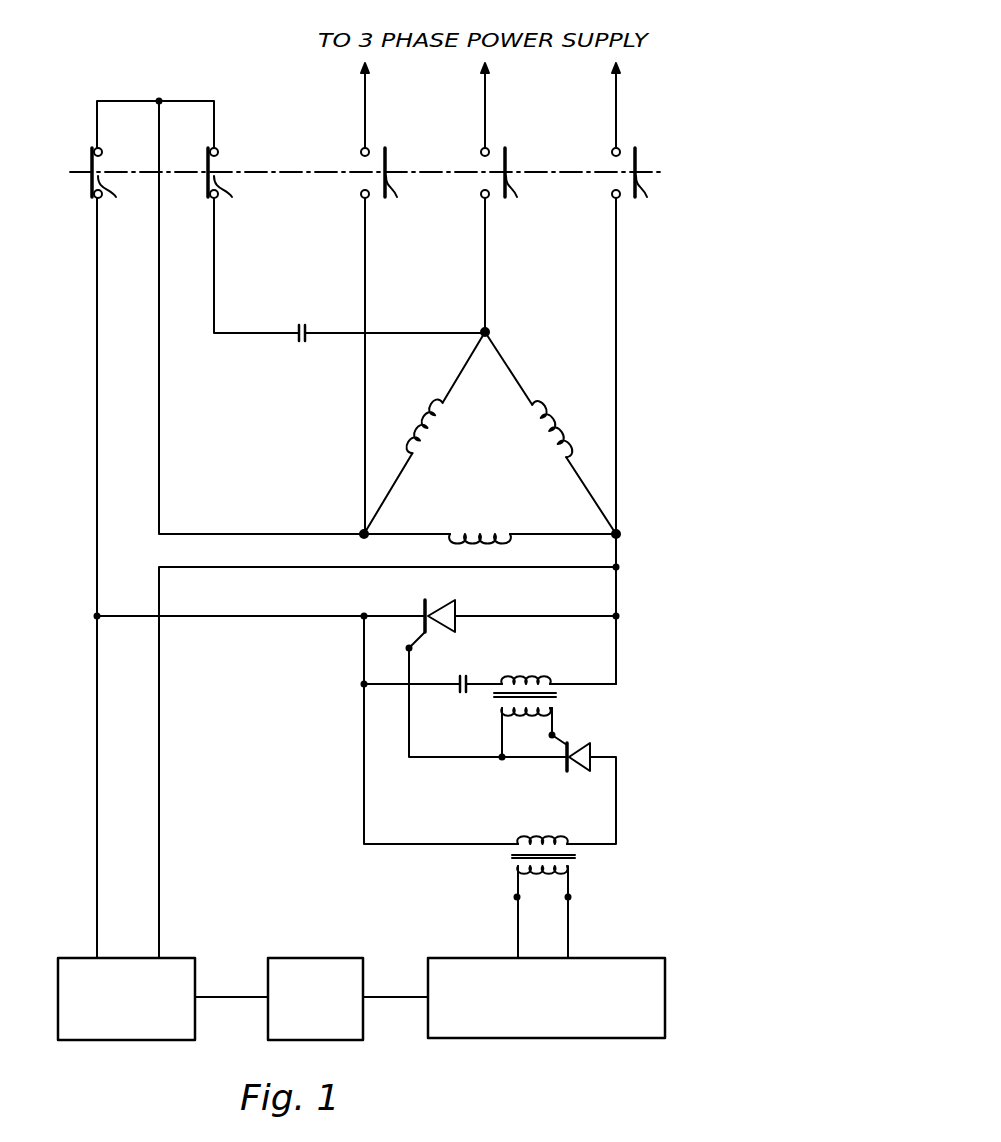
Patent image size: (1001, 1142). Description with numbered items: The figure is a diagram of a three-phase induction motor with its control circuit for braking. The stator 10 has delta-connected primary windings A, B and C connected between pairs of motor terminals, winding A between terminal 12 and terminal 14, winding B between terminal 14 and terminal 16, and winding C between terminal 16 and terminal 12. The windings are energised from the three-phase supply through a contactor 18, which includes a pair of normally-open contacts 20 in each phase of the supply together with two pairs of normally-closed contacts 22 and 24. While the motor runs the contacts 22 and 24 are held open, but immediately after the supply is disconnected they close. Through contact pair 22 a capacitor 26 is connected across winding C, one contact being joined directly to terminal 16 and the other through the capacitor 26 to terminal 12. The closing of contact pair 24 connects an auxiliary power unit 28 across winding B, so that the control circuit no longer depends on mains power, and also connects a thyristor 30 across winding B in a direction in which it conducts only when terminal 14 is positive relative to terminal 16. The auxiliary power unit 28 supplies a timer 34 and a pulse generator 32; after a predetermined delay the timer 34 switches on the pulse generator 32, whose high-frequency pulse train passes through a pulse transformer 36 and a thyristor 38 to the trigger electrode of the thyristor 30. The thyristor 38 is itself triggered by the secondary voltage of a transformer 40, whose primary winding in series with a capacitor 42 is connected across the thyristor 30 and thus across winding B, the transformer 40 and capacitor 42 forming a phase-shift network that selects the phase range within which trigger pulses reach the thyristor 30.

The stator 10 is at (541, 381).
The terminal 12 is at (488, 329).
The terminal 14 is at (619, 531).
The terminal 16 is at (362, 532).
The contactor 18 is at (578, 170).
The normally-open contacts 20 is at (510, 191).
The normally-closed contacts 22 is at (229, 185).
The normally-closed contacts 24 is at (113, 185).
The capacitor 26 is at (299, 333).
The auxiliary power unit 28 is at (197, 962).
The thyristor 30 is at (457, 606).
The pulse generator 32 is at (468, 958).
The timer 34 is at (318, 958).
The pulse transformer 36 is at (572, 896).
The thyristor 38 is at (591, 752).
The transformer 40 is at (553, 670).
The capacitor 42 is at (468, 677).